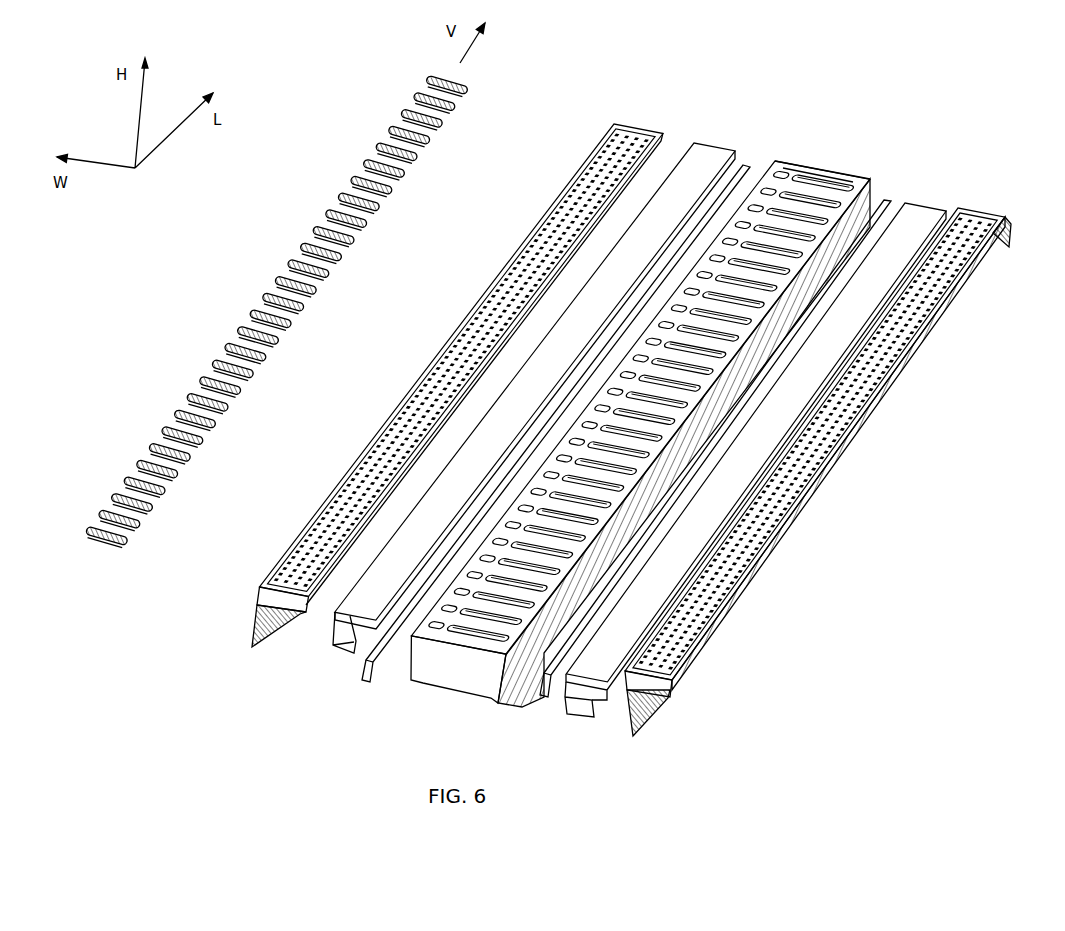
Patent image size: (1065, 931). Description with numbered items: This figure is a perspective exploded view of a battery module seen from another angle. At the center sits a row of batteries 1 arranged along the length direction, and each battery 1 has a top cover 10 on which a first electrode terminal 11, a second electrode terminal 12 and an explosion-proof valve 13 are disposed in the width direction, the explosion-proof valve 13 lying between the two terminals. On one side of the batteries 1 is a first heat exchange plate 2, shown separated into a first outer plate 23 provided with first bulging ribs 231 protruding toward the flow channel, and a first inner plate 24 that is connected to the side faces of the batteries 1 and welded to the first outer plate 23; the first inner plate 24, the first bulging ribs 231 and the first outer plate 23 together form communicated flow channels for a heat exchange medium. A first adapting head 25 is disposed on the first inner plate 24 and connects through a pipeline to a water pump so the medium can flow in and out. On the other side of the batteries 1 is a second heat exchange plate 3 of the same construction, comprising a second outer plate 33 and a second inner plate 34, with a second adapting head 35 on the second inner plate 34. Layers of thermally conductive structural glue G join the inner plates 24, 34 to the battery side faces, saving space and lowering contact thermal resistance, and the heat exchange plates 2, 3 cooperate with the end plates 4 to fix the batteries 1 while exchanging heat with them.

The battery 1 is at (836, 172).
The first heat exchange plate 2 is at (570, 137).
The second heat exchange plate 3 is at (1001, 184).
The end plate 4 is at (812, 163).
The top cover 10 is at (770, 168).
The first electrode terminal 11 is at (795, 172).
The second electrode terminal 12 is at (875, 180).
The explosion-proof valve 13 is at (797, 160).
The first outer plate 23 is at (631, 127).
The first bulging ribs 231 is at (590, 168).
The first inner plate 24 is at (694, 142).
The first adapting head 25 is at (333, 654).
The second outer plate 33 is at (1002, 214).
The second inner plate 34 is at (932, 204).
The second adapting head 35 is at (574, 728).
The thermally conductive structural glue G is at (742, 163).